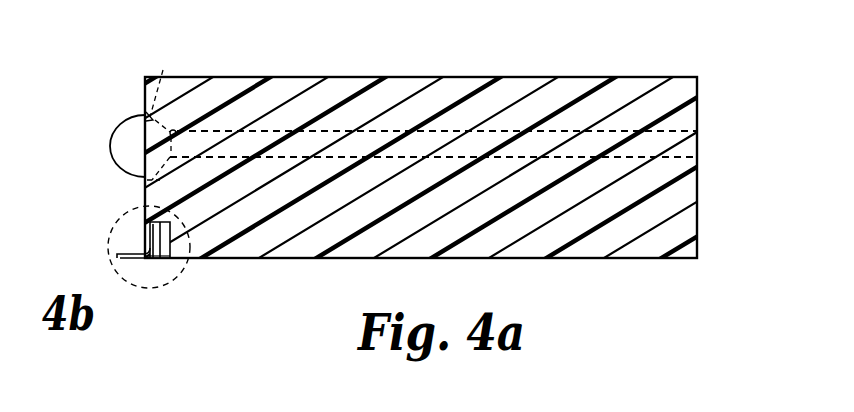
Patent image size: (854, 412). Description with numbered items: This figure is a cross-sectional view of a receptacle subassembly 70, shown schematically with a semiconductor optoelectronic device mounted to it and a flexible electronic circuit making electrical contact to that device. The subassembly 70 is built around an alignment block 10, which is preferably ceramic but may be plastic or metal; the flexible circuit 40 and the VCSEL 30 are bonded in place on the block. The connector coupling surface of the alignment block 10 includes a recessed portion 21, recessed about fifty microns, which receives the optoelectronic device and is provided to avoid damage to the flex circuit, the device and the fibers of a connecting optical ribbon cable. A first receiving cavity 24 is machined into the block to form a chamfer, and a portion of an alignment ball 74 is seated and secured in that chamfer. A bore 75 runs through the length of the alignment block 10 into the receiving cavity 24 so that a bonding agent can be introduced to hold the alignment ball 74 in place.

The receptacle subassembly 70 is at (636, 40).
The alignment block 10 is at (303, 86).
The first receiving cavity 24 is at (163, 70).
The alignment ball 74 is at (122, 129).
The bore 75 is at (701, 147).
The recessed portion 21 is at (150, 222).
The flexible circuit 40 is at (128, 251).
The VCSEL 30 is at (170, 262).